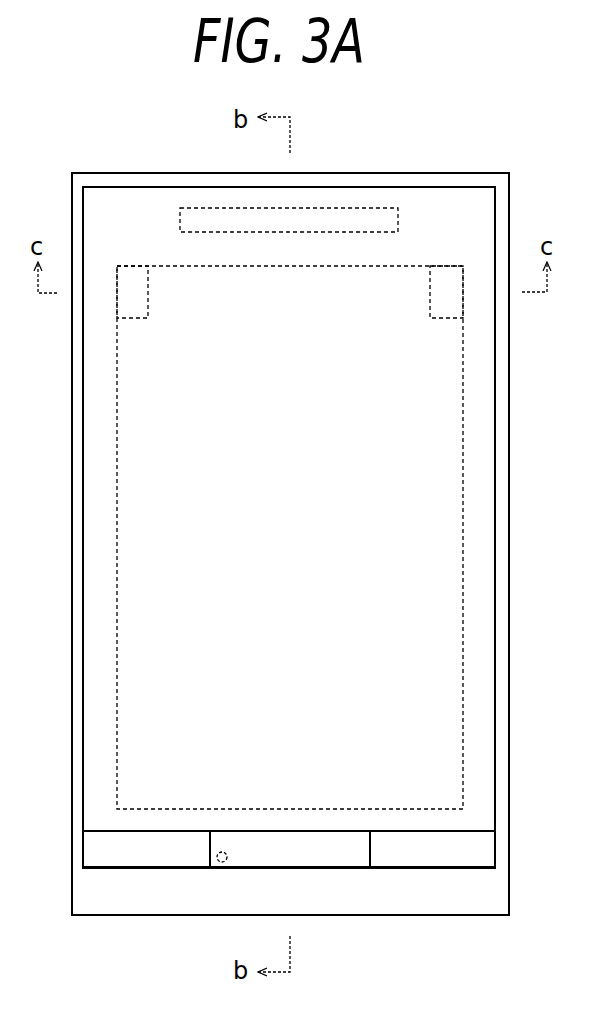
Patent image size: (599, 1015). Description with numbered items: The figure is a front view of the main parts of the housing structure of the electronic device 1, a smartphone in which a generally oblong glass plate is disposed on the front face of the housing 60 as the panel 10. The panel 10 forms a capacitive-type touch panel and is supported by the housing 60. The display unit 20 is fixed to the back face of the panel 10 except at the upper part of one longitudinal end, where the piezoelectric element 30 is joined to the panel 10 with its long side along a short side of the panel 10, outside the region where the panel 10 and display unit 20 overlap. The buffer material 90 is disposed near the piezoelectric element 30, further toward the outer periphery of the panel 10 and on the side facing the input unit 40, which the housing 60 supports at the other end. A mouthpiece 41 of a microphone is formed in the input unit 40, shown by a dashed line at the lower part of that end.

The electronic device 1 is at (140, 158).
The panel 10 is at (415, 186).
The housing 60 is at (332, 158).
The piezoelectric element 30 is at (180, 219).
The display unit 20 is at (385, 266).
The buffer material 90 is at (148, 303).
The input unit 40 is at (100, 858).
The mouthpiece 41 is at (219, 864).